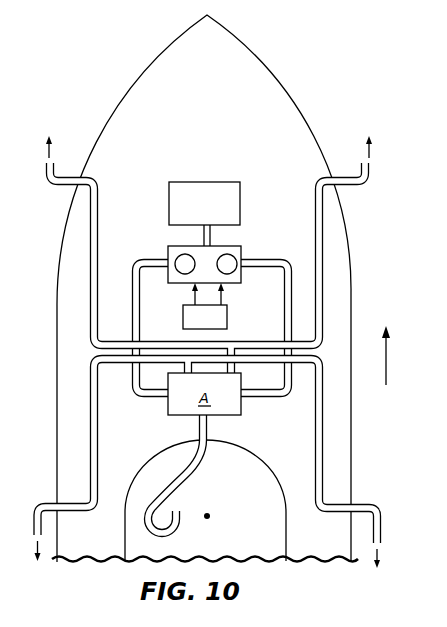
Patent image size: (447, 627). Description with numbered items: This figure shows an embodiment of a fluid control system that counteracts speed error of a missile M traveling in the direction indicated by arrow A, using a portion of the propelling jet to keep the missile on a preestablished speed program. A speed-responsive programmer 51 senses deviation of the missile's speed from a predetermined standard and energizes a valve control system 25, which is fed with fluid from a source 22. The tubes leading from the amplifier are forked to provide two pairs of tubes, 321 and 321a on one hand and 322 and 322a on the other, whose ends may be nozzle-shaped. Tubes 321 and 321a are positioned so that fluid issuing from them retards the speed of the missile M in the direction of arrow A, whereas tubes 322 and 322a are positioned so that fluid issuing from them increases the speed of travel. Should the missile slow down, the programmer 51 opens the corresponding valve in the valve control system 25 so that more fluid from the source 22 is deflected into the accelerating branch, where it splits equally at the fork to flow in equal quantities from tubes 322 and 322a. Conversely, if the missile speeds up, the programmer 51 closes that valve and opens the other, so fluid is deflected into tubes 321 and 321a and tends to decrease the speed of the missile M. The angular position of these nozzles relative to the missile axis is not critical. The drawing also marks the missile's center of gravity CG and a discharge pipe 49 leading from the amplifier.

The missile M is at (144, 71).
The source 22 is at (195, 213).
The valve control system 25 is at (243, 252).
The speed-responsive programmer 51 is at (205, 306).
The discharge pipe 49 is at (168, 480).
The tube 321 is at (52, 183).
The tube 321a is at (364, 183).
The tube 322 is at (40, 509).
The tube 322a is at (367, 508).
The center of gravity CG is at (209, 514).
The arrow A is at (384, 370).